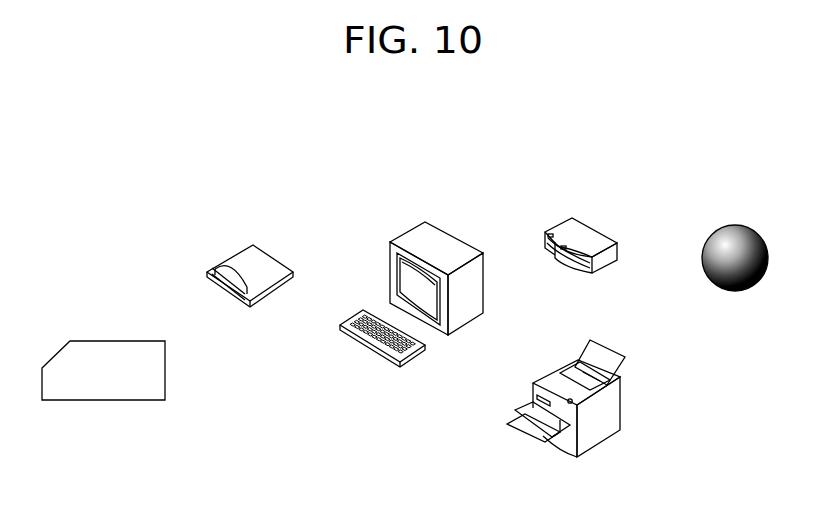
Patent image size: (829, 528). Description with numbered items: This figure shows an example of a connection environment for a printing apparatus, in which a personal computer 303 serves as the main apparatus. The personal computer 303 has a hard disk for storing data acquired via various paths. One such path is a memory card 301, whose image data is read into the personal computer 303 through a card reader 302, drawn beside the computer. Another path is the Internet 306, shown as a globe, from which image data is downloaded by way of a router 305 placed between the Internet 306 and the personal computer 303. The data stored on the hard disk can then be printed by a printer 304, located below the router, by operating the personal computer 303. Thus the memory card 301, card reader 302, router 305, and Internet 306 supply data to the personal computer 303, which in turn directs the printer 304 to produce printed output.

The memory card 301 is at (101, 401).
The card reader 302 is at (263, 245).
The personal computer 303 is at (448, 232).
The printer 304 is at (607, 443).
The router 305 is at (598, 228).
The Internet 306 is at (738, 225).